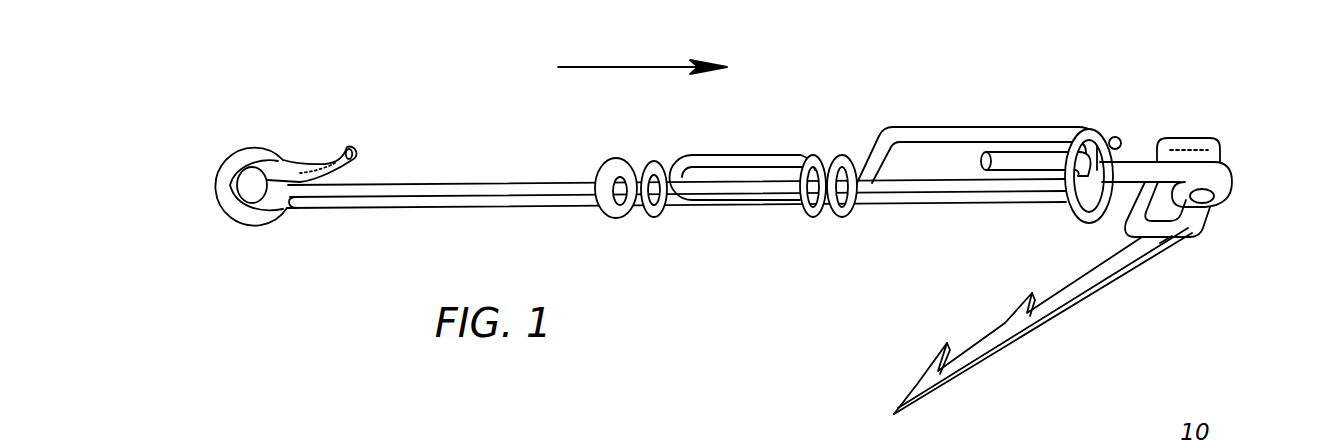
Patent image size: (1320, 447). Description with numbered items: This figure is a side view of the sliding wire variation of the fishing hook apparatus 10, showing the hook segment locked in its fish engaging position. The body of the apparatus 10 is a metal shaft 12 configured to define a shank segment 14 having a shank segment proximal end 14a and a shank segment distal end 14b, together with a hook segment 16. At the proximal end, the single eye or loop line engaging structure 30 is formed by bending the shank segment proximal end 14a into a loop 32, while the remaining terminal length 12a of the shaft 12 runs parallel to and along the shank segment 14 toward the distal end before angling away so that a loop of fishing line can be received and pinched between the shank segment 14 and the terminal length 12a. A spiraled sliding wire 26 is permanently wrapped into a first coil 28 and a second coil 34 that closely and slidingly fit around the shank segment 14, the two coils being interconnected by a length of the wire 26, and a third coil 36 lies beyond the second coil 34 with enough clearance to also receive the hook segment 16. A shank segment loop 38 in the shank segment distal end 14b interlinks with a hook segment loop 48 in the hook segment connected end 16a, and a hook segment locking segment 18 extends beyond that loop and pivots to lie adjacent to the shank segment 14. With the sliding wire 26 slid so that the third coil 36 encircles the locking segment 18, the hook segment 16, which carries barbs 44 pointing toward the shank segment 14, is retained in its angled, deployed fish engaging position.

The fishing hook apparatus 10 is at (1197, 103).
The metal shaft 12 is at (408, 198).
The terminal length of the shaft 12a is at (323, 162).
The shank segment 14 is at (495, 198).
The shank segment proximal end 14a is at (312, 198).
The shank segment distal end 14b is at (1088, 228).
The hook segment 16 is at (1090, 296).
The hook segment connected end 16a is at (1200, 228).
The hook segment locking segment 18 is at (1013, 155).
The spiraled sliding wire 26 is at (755, 158).
The first coil 28 is at (621, 160).
The single eye line engaging structure 30 is at (284, 133).
The loop 32 is at (230, 204).
The second coil 34 is at (813, 156).
The third coil 36 is at (1103, 130).
The shank segment loop 38 is at (1163, 250).
The barbs 44 is at (1027, 300).
The hook segment loop 48 is at (1217, 203).